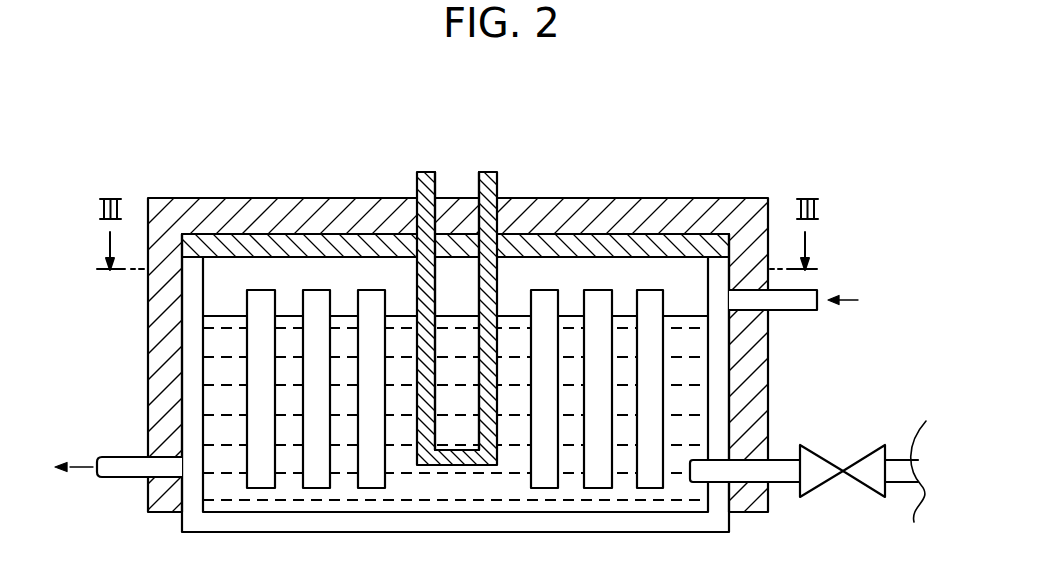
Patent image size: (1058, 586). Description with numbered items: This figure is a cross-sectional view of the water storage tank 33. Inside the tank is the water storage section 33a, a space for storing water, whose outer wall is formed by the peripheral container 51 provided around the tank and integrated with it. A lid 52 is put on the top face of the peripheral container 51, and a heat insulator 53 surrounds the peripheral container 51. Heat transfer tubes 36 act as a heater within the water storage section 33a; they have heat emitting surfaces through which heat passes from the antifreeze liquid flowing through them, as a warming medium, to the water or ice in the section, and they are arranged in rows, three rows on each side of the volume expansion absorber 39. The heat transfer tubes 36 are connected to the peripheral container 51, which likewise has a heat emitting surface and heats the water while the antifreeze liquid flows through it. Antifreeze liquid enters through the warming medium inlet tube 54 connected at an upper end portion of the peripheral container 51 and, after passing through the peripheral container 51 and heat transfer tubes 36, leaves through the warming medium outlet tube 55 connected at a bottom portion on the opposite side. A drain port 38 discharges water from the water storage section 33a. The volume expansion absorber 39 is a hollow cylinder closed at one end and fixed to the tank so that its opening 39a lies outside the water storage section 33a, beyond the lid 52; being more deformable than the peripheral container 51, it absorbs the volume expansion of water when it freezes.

The water storage tank 33 is at (529, 339).
The water storage section 33a is at (222, 308).
The heat transfer tubes 36 is at (246, 448).
The drain port 38 is at (896, 484).
The volume expansion absorber 39 is at (497, 175).
The opening 39a is at (454, 187).
The peripheral container 51 is at (196, 376).
The lid 52 is at (634, 240).
The heat insulator 53 is at (757, 401).
The warming medium inlet tube 54 is at (797, 298).
The warming medium outlet tube 55 is at (131, 480).